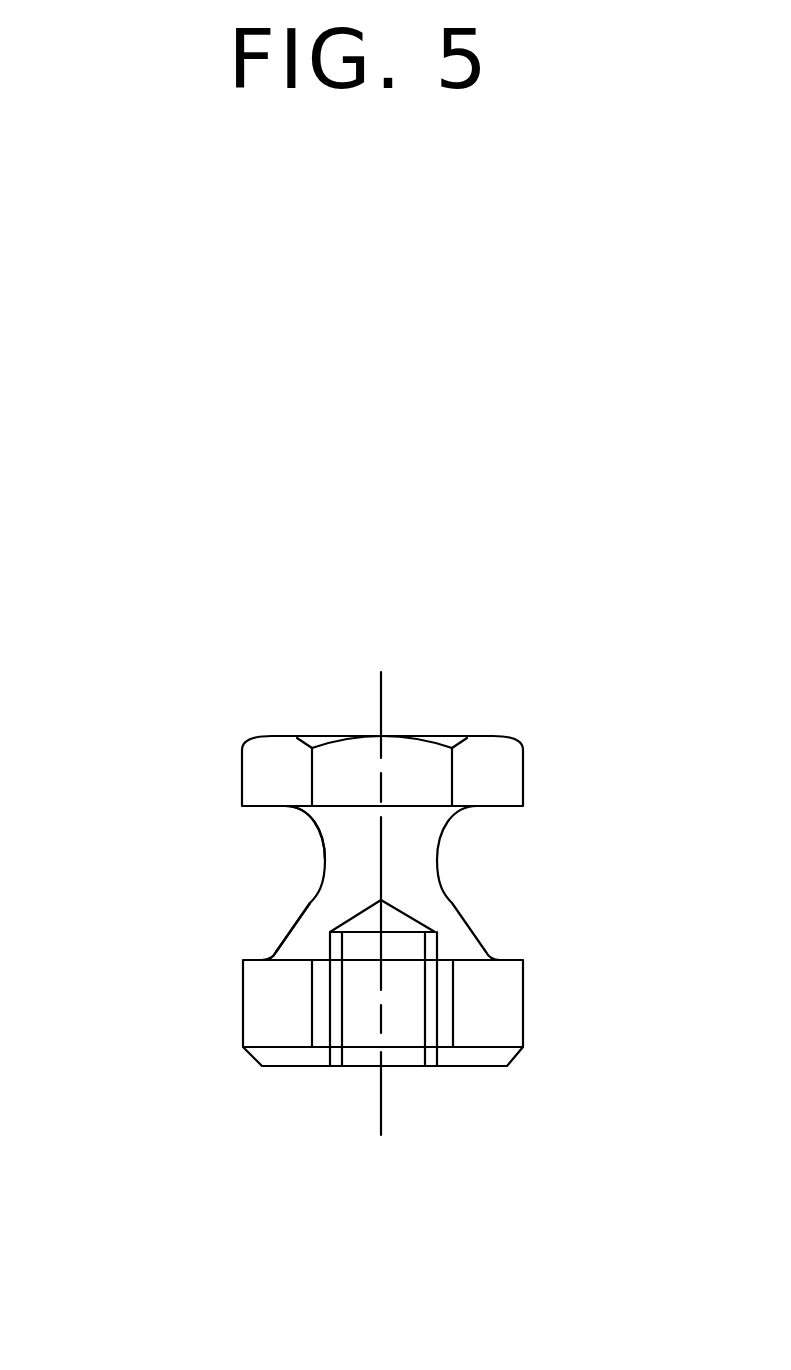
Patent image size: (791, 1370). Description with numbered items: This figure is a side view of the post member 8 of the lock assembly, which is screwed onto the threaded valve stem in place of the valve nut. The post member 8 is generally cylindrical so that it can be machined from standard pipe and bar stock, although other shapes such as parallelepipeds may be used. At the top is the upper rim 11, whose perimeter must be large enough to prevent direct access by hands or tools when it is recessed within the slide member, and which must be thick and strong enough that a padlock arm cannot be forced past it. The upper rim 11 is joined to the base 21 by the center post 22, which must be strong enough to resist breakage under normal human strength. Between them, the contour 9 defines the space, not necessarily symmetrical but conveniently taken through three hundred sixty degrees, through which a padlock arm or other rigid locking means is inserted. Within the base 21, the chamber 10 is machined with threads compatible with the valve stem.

The upper rim 11 is at (523, 772).
The post member 8 is at (317, 835).
The contour 9 is at (293, 928).
The center post 22 is at (408, 878).
The chamber 10 is at (373, 1023).
The base 21 is at (470, 1067).